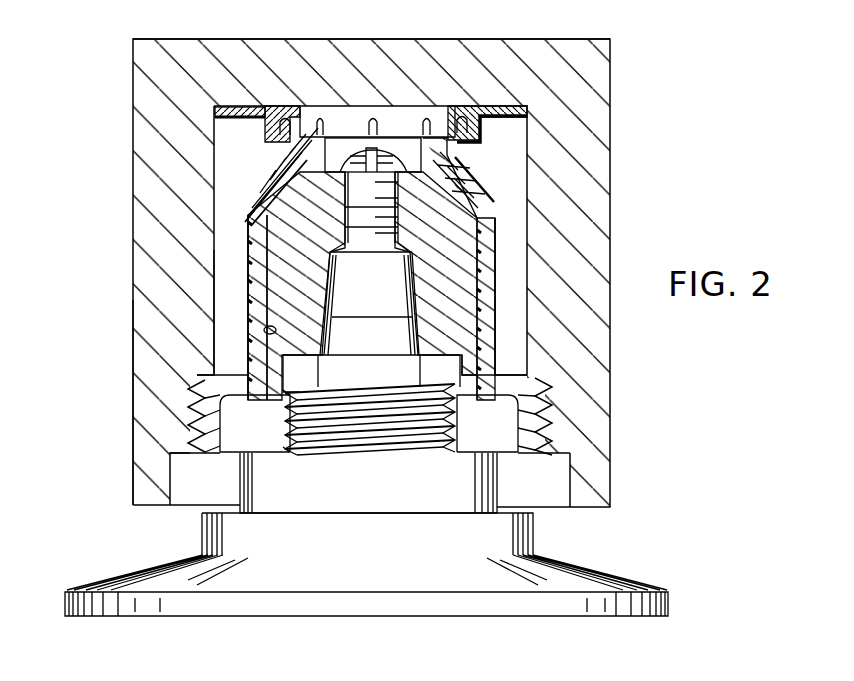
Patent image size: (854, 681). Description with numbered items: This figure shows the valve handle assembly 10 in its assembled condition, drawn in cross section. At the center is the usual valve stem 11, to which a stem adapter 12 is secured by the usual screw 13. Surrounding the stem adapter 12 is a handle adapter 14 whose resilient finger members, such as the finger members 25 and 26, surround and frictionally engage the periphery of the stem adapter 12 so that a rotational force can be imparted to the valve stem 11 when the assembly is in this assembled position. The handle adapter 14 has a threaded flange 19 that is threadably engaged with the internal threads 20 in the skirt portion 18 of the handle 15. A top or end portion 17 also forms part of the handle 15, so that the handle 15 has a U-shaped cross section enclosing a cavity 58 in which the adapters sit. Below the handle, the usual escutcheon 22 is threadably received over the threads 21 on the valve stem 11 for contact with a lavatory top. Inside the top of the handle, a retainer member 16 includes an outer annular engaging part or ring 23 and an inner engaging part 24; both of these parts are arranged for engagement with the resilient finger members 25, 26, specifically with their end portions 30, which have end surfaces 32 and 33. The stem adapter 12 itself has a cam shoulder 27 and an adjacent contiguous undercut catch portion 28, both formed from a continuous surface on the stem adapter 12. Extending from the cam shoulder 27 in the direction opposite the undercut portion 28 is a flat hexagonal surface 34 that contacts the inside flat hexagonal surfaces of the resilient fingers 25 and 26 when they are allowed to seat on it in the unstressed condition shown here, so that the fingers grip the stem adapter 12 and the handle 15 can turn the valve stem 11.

The valve handle assembly 10 is at (122, 205).
The valve stem 11 is at (380, 298).
The stem adapter 12 is at (317, 318).
The screw 13 is at (388, 162).
The handle adapter 14 is at (248, 292).
The handle 15 is at (133, 118).
The retainer member 16 is at (243, 112).
The top or end portion 17 is at (262, 39).
The skirt portion 18 is at (133, 358).
The threaded flange 19 is at (222, 427).
The internal threads 20 is at (197, 412).
The threads 21 is at (367, 455).
The escutcheon 22 is at (130, 573).
The outer annular engaging part or ring 23 is at (288, 142).
The inner engaging part 24 is at (462, 152).
The resilient finger member 25 is at (505, 216).
The resilient finger member 26 is at (262, 208).
The cam shoulder 27 is at (262, 245).
The undercut catch portion 28 is at (288, 182).
The end portions 30 is at (470, 190).
The end surface 32 is at (316, 130).
The end surface 33 is at (371, 154).
The flat hexagonal surface 34 is at (264, 332).
The cavity 58 is at (218, 306).